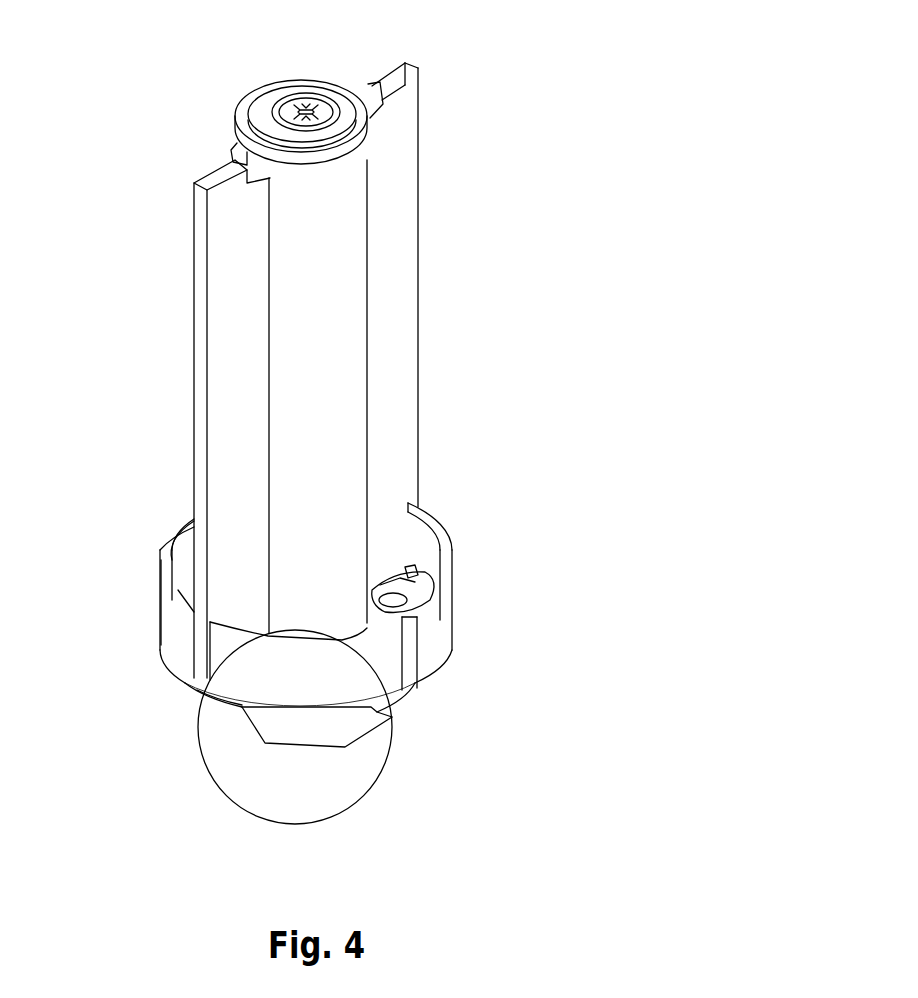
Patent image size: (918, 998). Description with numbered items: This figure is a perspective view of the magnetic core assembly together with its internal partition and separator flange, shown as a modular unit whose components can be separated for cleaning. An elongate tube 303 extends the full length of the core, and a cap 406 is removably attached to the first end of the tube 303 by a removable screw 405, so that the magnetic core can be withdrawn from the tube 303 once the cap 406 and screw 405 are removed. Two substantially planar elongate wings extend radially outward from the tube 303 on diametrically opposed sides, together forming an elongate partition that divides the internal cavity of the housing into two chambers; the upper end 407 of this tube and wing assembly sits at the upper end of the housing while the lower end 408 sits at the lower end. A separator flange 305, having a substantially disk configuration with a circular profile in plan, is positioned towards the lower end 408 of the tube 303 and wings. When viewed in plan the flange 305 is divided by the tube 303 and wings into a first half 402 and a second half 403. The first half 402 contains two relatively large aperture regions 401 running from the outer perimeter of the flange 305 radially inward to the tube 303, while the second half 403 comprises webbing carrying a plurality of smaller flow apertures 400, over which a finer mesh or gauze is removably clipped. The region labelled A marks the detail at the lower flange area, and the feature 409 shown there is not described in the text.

The elongate tube 303 is at (328, 333).
The separator flange 305 is at (447, 642).
The flow apertures 400 is at (410, 572).
The aperture regions 401 is at (190, 592).
The first half 402 is at (173, 635).
The second half 403 is at (365, 689).
The removable screw 405 is at (307, 102).
The cap 406 is at (263, 104).
The upper end 407 is at (407, 63).
The lower end 408 is at (195, 682).
The boss 409 is at (302, 750).
The detail region A is at (370, 737).